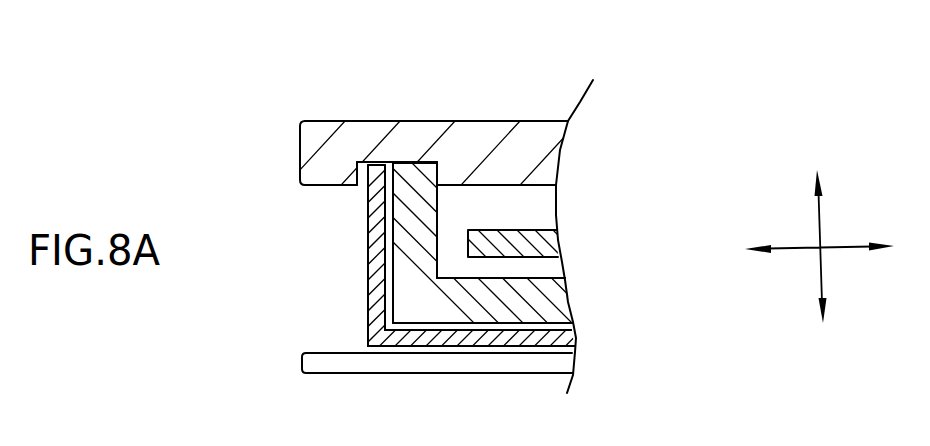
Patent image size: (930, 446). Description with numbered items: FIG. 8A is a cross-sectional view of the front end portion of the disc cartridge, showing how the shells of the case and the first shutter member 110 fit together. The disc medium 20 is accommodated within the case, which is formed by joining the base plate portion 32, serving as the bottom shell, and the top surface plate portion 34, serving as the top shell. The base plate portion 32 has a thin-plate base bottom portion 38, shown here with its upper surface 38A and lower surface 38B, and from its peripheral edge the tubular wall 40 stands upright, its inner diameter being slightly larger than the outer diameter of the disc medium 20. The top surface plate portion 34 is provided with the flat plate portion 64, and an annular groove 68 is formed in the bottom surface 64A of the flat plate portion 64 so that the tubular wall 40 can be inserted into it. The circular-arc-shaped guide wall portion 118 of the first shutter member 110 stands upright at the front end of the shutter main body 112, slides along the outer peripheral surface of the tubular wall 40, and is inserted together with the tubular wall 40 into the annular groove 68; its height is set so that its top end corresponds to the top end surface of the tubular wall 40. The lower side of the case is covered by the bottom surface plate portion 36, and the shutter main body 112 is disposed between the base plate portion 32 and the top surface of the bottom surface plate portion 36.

The disc medium 20 is at (558, 240).
The base plate portion 32 is at (556, 272).
The top surface plate portion 34 is at (452, 112).
The bottom surface plate portion 36 is at (503, 362).
The base bottom portion 38 is at (567, 303).
The upper surface of support member 38A is at (510, 278).
The lower surface of support member 38B is at (552, 325).
The tubular wall 40 is at (420, 228).
The flat plate portion 64 is at (378, 130).
The bottom surface 64A is at (538, 189).
The annular groove 68 is at (350, 174).
The first shutter member 110 is at (356, 313).
The shutter main body 112 is at (433, 333).
The circular-arc-shaped guide wall portion 118 is at (368, 245).